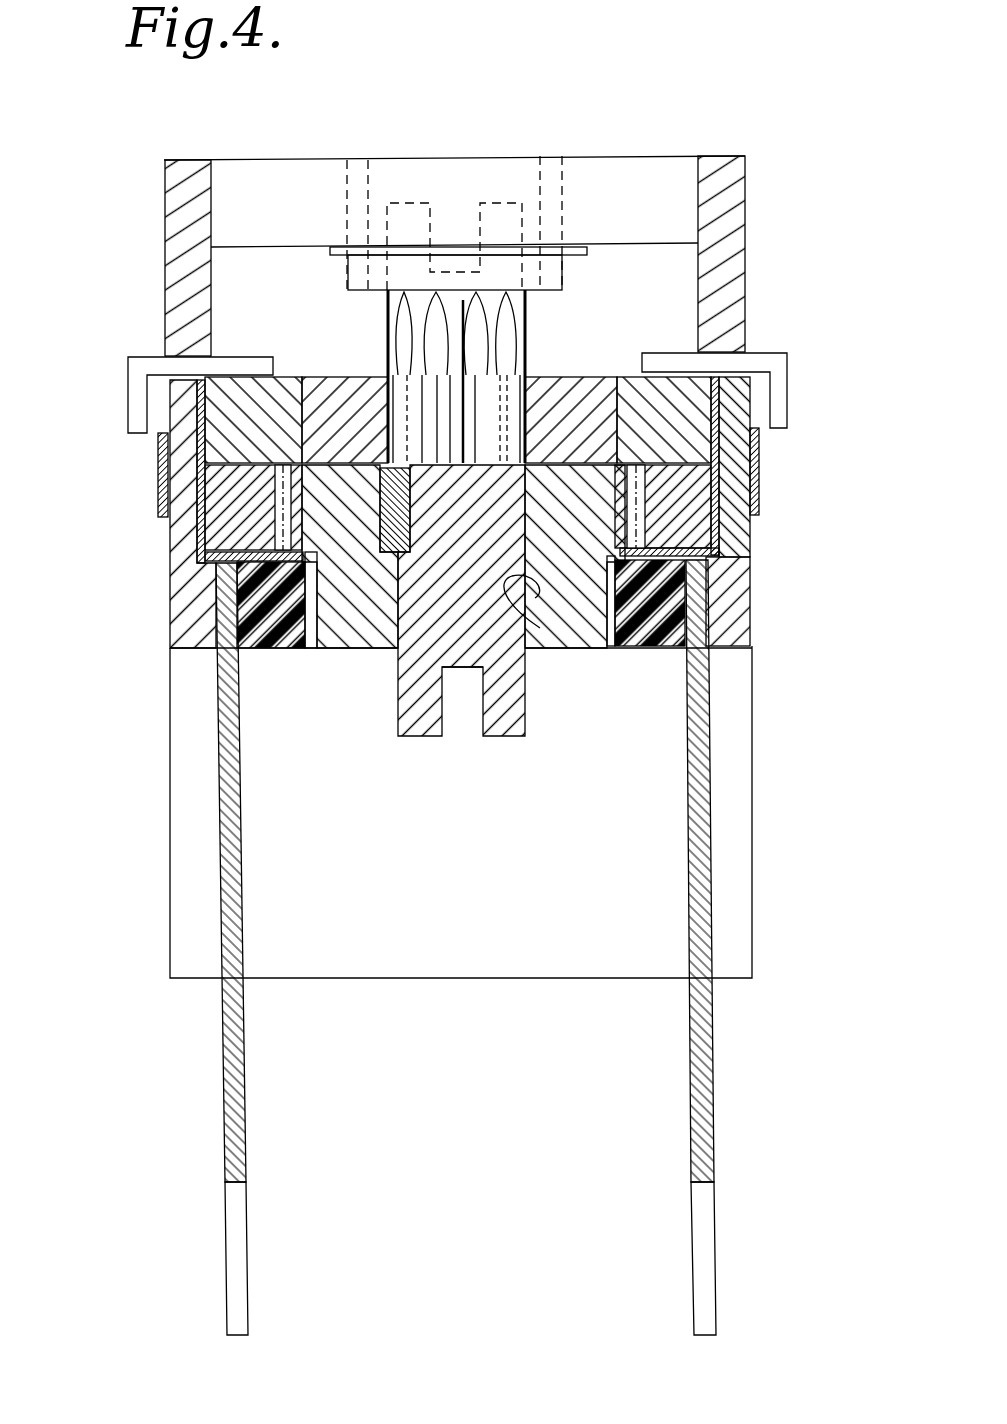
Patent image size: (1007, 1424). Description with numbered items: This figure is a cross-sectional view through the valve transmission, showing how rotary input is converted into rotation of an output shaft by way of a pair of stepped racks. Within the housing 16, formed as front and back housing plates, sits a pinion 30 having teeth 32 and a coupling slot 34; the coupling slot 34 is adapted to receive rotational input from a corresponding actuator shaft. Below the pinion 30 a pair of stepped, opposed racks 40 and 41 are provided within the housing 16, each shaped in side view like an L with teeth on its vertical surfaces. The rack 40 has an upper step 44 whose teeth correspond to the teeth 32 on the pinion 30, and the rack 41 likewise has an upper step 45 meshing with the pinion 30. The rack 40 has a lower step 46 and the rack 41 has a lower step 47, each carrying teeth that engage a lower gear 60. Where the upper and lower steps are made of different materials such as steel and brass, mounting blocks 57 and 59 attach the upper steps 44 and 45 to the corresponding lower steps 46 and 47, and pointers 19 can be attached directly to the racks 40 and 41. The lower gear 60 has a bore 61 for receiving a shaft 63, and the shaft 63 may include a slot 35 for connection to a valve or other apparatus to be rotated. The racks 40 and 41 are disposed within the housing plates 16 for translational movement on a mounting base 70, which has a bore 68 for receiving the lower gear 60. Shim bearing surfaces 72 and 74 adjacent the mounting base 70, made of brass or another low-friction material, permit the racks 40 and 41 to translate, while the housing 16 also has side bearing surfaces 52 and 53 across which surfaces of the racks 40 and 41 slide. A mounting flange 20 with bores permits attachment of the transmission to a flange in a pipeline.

The housing 16 is at (178, 268).
The pointers 19 is at (140, 362).
The mounting flange 20 is at (712, 1062).
The pinion 30 is at (427, 297).
The teeth 32 is at (477, 348).
The coupling slot 34 is at (432, 270).
The slot 35 is at (443, 703).
The rack 40 is at (342, 375).
The rack 41 is at (570, 376).
The upper step 44 is at (332, 440).
The upper step 45 is at (602, 375).
The lower step 46 is at (232, 527).
The lower step 47 is at (665, 545).
The side bearing surface 52 is at (230, 497).
The side bearing surface 53 is at (683, 433).
The mounting block 57 is at (227, 403).
The mounting block 59 is at (688, 405).
The lower gear 60 is at (377, 640).
The bore 61 is at (540, 628).
The shaft 63 is at (513, 720).
The bore 68 is at (347, 620).
The mounting base 70 is at (657, 623).
The shim bearing surface 72 is at (175, 612).
The shim bearing surface 74 is at (697, 560).